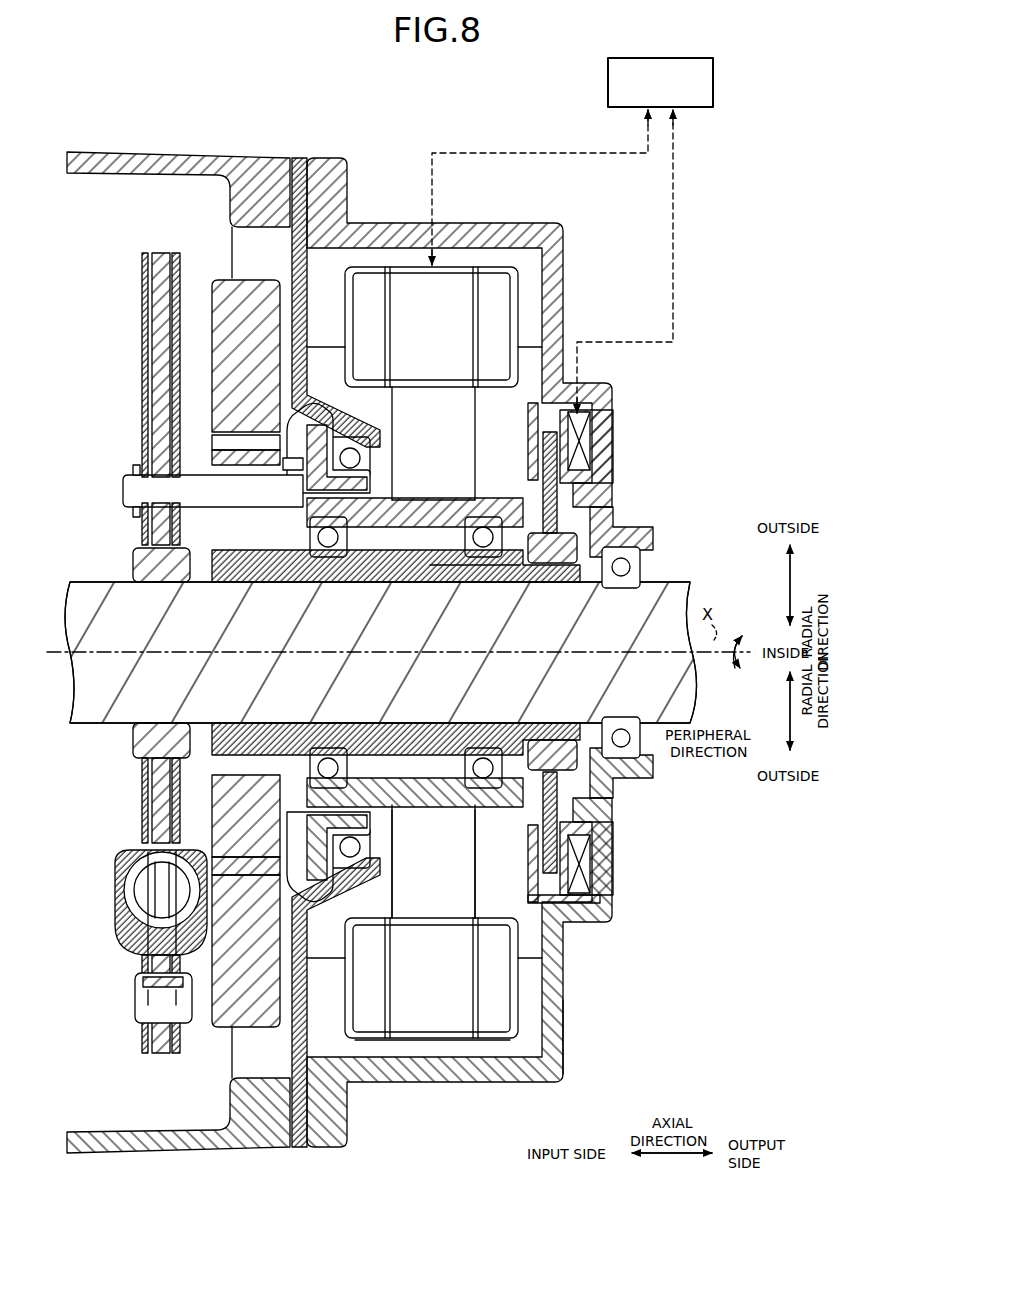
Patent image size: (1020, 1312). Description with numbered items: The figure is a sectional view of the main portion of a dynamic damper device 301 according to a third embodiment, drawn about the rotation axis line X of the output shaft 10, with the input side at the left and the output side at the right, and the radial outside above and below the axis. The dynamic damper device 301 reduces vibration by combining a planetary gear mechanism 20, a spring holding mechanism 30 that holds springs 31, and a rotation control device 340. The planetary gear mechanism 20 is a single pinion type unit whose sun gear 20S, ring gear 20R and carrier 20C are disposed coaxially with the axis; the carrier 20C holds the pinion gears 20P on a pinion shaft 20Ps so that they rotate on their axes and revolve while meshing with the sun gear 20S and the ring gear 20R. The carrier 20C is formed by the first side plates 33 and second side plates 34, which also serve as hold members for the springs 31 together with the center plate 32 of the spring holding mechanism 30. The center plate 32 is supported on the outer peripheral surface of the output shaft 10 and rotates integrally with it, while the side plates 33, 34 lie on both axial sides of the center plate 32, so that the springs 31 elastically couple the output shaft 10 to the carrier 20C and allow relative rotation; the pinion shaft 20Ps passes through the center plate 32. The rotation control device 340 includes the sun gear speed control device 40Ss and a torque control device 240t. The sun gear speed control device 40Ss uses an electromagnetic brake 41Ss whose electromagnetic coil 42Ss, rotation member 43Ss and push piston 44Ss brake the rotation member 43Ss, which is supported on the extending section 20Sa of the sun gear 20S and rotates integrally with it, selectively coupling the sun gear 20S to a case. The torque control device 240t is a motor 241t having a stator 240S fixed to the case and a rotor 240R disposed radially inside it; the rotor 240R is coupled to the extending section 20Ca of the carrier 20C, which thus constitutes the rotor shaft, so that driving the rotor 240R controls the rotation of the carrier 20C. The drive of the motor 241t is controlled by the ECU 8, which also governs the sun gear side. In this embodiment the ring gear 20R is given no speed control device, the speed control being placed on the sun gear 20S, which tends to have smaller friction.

The ECU 8 is at (713, 82).
The output shaft 10 is at (92, 582).
The planetary gear mechanism 20 is at (222, 272).
The ring gear 20R is at (283, 278).
The carrier 20C is at (109, 399).
The first side plates 33 is at (173, 277).
The second side plates 34 is at (143, 318).
The pinion gears 20P is at (245, 444).
The pinion shaft 20Ps is at (248, 546).
The sun gear 20S is at (300, 496).
The extending section of the carrier 20Ca is at (415, 507).
The extending section of the sun gear 20Sa is at (430, 570).
The spring holding mechanism 30 is at (110, 1043).
The springs 31 is at (127, 888).
The center plate 32 is at (162, 817).
The sun gear speed control device 40Ss is at (623, 828).
The electromagnetic brake 41Ss is at (617, 875).
The electromagnetic coil 42Ss is at (612, 893).
The rotation member 43Ss is at (612, 793).
The push piston 44Ss is at (612, 820).
The rotor 240R is at (460, 887).
The stator 240S is at (460, 983).
The torque control device 240t is at (432, 1132).
The motor 241t is at (432, 1046).
The dynamic damper device 301 is at (407, 125).
The rotation control device 340 is at (630, 1058).